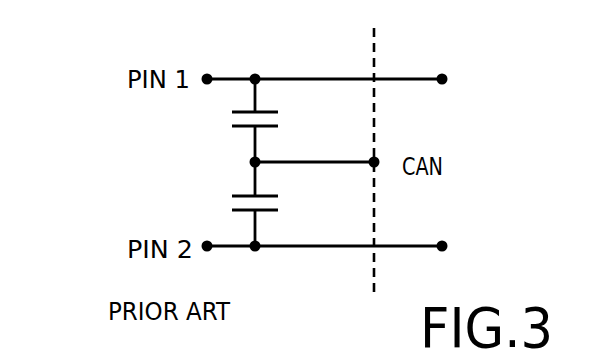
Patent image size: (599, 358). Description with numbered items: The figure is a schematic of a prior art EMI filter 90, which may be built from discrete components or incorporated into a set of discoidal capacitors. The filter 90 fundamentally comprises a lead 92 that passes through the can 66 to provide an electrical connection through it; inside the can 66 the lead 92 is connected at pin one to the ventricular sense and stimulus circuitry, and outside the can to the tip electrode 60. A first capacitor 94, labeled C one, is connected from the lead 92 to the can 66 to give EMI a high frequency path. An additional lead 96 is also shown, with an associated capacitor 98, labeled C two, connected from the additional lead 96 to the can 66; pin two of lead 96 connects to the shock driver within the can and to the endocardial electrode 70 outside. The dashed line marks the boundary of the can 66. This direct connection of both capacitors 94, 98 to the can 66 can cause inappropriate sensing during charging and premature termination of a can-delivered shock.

The tip electrode 60 is at (481, 51).
The can 66 is at (353, 161).
The endocardial electrode 70 is at (488, 268).
The EMI filter 90 is at (126, 211).
The lead 92 is at (322, 52).
The first capacitor 94 is at (260, 129).
The additional lead 96 is at (322, 282).
The capacitor 98 is at (264, 212).